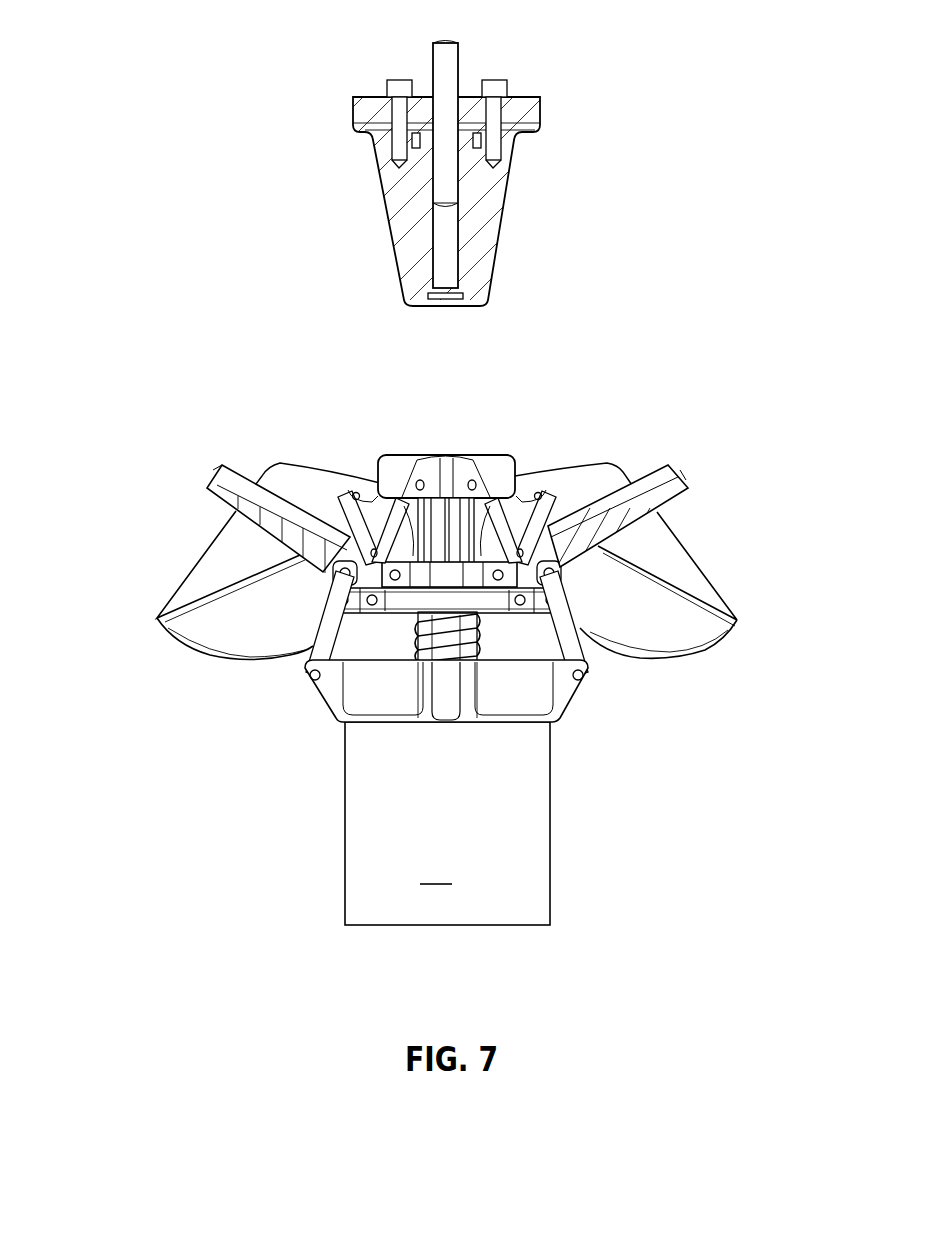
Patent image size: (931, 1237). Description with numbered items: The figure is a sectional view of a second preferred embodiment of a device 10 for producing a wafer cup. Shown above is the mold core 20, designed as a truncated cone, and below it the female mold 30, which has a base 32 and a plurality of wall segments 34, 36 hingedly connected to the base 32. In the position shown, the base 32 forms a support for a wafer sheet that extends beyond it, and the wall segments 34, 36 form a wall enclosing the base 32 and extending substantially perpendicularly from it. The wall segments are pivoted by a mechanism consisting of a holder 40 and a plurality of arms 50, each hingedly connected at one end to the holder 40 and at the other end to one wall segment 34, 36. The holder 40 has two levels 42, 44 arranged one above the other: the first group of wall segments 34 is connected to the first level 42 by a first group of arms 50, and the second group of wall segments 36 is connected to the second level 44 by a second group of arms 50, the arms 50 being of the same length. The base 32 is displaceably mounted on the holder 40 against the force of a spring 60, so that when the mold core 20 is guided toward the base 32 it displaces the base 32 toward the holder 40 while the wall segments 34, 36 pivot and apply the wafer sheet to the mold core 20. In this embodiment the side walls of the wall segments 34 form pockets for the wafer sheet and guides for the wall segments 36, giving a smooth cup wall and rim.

The device 10 is at (128, 128).
The mold core 20 is at (512, 211).
The female mold 30 is at (335, 748).
The base 32 is at (452, 457).
The wall segments 34 is at (233, 477).
The wall segments 36 is at (200, 634).
The holder 40 is at (447, 711).
The first level 42 is at (562, 601).
The second level 44 is at (590, 673).
The arms 50 is at (570, 630).
The spring 60 is at (420, 633).